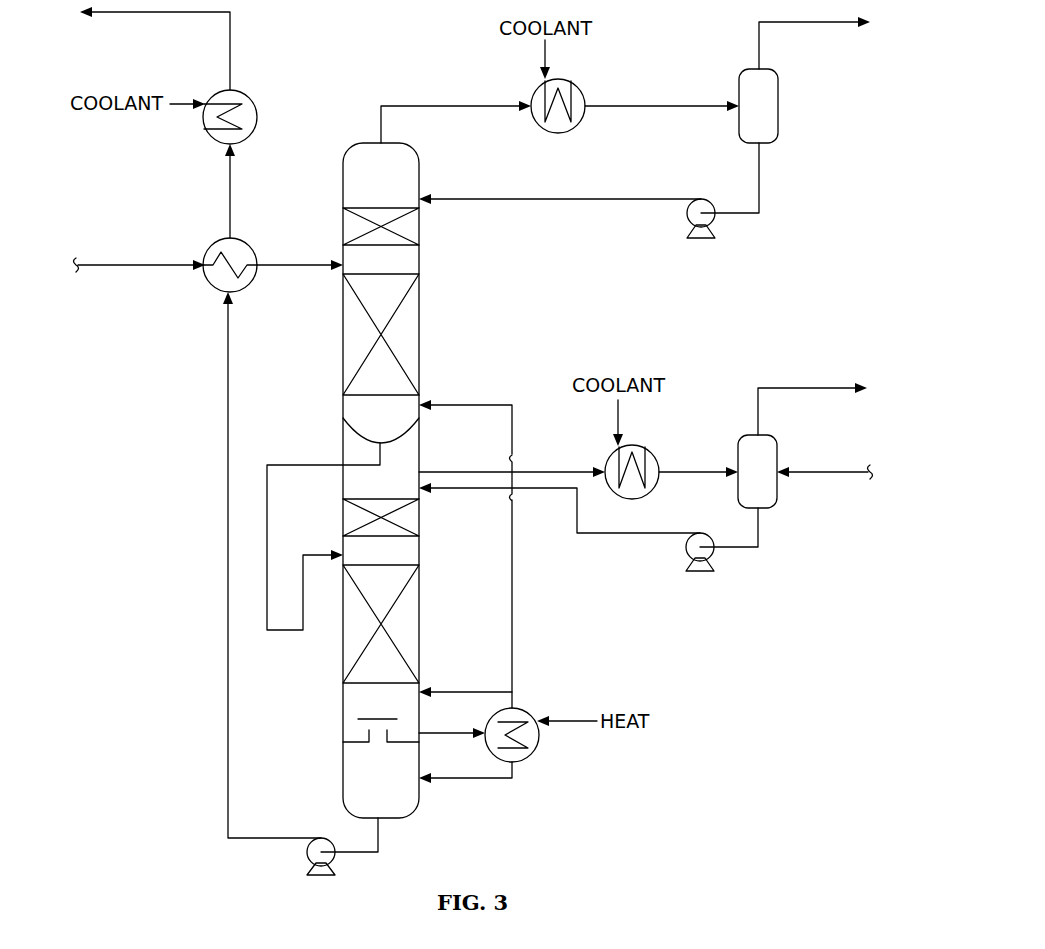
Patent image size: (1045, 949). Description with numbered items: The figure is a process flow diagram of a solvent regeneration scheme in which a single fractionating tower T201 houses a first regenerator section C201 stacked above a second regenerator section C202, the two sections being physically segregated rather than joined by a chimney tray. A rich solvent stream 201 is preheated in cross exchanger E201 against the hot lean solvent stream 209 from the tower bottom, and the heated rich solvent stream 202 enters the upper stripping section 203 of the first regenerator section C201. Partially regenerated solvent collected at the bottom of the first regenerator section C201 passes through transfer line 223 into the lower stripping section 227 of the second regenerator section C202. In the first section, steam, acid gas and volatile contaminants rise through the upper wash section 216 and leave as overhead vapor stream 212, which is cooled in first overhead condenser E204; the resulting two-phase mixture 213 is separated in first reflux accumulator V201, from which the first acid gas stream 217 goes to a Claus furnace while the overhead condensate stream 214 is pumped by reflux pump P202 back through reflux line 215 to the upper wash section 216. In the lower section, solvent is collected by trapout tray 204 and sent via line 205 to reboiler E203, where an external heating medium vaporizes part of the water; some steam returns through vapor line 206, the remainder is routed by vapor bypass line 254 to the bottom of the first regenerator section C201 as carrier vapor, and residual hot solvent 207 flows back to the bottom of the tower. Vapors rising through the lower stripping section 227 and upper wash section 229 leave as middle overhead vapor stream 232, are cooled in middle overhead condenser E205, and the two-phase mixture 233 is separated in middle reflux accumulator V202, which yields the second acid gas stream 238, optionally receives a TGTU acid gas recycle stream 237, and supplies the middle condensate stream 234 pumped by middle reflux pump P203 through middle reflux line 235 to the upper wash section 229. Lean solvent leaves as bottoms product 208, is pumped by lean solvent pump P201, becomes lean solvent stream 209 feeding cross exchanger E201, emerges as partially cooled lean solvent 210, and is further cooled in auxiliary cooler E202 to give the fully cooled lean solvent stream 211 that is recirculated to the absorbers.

The fractionating tower T201 is at (422, 335).
The upper wash section 216 is at (356, 227).
The upper stripping section 203 is at (353, 340).
The first regenerator section C201 is at (343, 418).
The transfer line 223 is at (268, 524).
The upper wash section 229 is at (407, 522).
The lower stripping section 227 is at (398, 626).
The second regenerator section C202 is at (343, 712).
The trapout tray 204 is at (357, 742).
The fully cooled lean solvent stream 211 is at (231, 37).
The auxiliary cooler E202 is at (245, 98).
The partially cooled lean solvent 210 is at (231, 202).
The cross exchanger E201 is at (215, 245).
The rich solvent stream 201 is at (136, 264).
The heated rich solvent stream 202 is at (302, 268).
The lean solvent stream 209 is at (227, 710).
The overhead vapor stream 212 is at (457, 103).
The first overhead condenser E204 is at (583, 92).
The two-phase mixture of condensate and acid gas 213 is at (692, 106).
The first reflux accumulator V201 is at (777, 113).
The first acid gas stream 217 is at (758, 43).
The overhead condensate stream 214 is at (759, 187).
The reflux pump P202 is at (715, 220).
The reflux line 215 is at (607, 199).
The middle overhead vapor stream 232 is at (550, 470).
The middle overhead condenser E205 is at (628, 447).
The two-phase mixture of condensate and acid gas 233 is at (679, 472).
The middle reflux accumulator V202 is at (770, 437).
The second acid gas stream 238 is at (780, 388).
The TGTU acid gas recycle stream 237 is at (810, 471).
The middle condensate stream 234 is at (759, 528).
The middle reflux pump P203 is at (688, 550).
The middle reflux line 235 is at (625, 532).
The vapor bypass line 254 is at (512, 583).
The vapor line 206 is at (450, 691).
The line 205 is at (430, 732).
The reboiler E203 is at (527, 712).
The residual hot solvent 207 is at (487, 780).
The bottoms product 208 is at (378, 832).
The lean solvent pump P201 is at (322, 837).